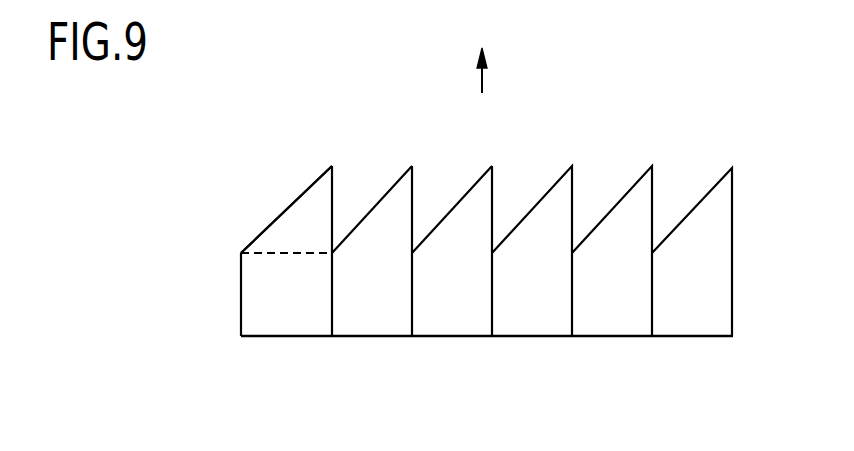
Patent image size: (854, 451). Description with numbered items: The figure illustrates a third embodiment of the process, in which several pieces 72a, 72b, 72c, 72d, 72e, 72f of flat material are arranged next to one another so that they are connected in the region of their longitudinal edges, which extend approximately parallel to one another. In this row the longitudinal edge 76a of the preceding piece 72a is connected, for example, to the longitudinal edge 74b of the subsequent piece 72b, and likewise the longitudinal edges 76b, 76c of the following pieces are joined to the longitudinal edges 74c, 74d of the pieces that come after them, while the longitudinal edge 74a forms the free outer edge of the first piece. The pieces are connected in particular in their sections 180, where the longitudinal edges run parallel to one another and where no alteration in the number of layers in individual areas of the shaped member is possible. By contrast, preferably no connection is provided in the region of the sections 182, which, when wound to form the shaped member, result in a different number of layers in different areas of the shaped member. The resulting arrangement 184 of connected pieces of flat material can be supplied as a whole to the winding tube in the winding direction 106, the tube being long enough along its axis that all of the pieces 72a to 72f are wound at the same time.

The piece of flat material 72a is at (315, 289).
The piece of flat material 72b is at (399, 287).
The piece of flat material 72c is at (476, 285).
The piece of flat material 72d is at (556, 284).
The piece of flat material 72e is at (633, 284).
The piece of flat material 72f is at (714, 284).
The longitudinal edge 74a is at (241, 314).
The longitudinal edge 74b is at (333, 329).
The longitudinal edge 74c is at (413, 328).
The longitudinal edge 74d is at (492, 328).
The longitudinal edge 76a is at (333, 312).
The longitudinal edge 76b is at (413, 312).
The longitudinal edge 76c is at (492, 312).
The winding direction 106 is at (484, 82).
The section 180 is at (250, 275).
The section 182 is at (300, 207).
The arrangement of pieces of flat material 184 is at (594, 143).